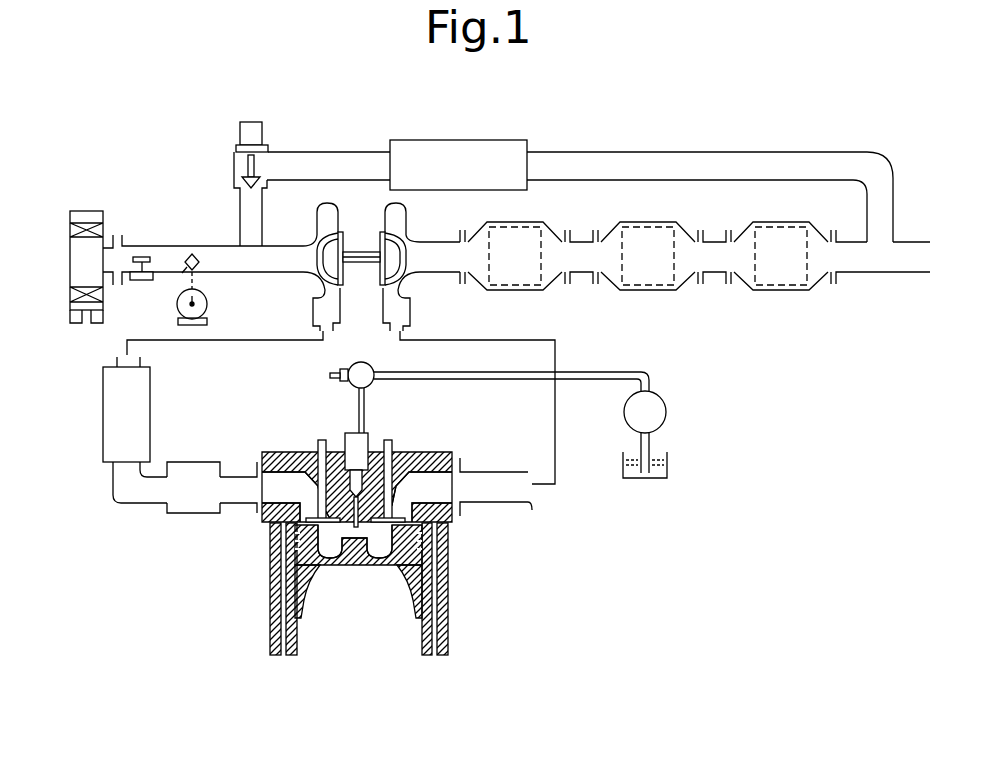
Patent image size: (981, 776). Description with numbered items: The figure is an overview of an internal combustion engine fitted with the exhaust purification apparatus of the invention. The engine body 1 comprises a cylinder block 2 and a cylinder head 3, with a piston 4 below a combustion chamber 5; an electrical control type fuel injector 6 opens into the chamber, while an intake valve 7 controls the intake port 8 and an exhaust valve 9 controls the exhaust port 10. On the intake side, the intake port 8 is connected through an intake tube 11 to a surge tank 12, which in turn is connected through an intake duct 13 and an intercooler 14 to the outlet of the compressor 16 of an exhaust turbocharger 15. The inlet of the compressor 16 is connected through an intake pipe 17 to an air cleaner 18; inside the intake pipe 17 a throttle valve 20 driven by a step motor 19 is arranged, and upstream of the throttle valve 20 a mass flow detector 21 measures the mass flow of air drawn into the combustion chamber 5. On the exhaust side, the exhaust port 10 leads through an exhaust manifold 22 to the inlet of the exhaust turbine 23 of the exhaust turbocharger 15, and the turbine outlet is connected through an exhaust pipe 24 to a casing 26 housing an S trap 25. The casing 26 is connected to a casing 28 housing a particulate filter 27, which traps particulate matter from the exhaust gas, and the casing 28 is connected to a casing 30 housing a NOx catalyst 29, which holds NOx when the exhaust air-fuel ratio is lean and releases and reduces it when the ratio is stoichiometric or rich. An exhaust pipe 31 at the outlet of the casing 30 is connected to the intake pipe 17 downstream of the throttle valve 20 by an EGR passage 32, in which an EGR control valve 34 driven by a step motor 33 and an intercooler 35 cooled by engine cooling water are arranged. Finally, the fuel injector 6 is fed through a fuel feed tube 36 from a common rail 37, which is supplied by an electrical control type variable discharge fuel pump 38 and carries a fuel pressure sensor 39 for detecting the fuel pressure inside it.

The engine body 1 is at (265, 623).
The cylinder block 2 is at (268, 585).
The cylinder head 3 is at (448, 452).
The piston 4 is at (377, 560).
The combustion chamber 5 is at (334, 545).
The fuel injector 6 is at (348, 443).
The intake valve 7 is at (318, 447).
The intake port 8 is at (260, 457).
The exhaust valve 9 is at (393, 443).
The exhaust port 10 is at (443, 493).
The intake tube 11 is at (240, 505).
The surge tank 12 is at (183, 514).
The intake duct 13 is at (113, 484).
The intercooler 14 is at (103, 415).
The exhaust turbocharger 15 is at (361, 268).
The compressor 16 is at (334, 214).
The intake pipe 17 is at (252, 274).
The air cleaner 18 is at (72, 258).
The step motor 19 is at (177, 305).
The throttle valve 20 is at (193, 252).
The mass flow detector 21 is at (142, 255).
The exhaust manifold 22 is at (531, 511).
The exhaust turbine 23 is at (398, 214).
The exhaust pipe 24 is at (444, 275).
The S trap 25 is at (515, 228).
The casing 26 is at (548, 288).
The particulate filter 27 is at (648, 228).
The casing 28 is at (681, 288).
The NOx catalyst 29 is at (782, 228).
The casing 30 is at (815, 288).
The exhaust pipe 31 is at (900, 274).
The EGR passage 32 is at (354, 150).
The step motor 33 is at (258, 131).
The EGR control valve 34 is at (233, 167).
The intercooler 35 is at (500, 142).
The fuel feed tube 36 is at (366, 395).
The common rail 37 is at (372, 368).
The variable discharge fuel pump 38 is at (667, 398).
The fuel pressure sensor 39 is at (341, 370).